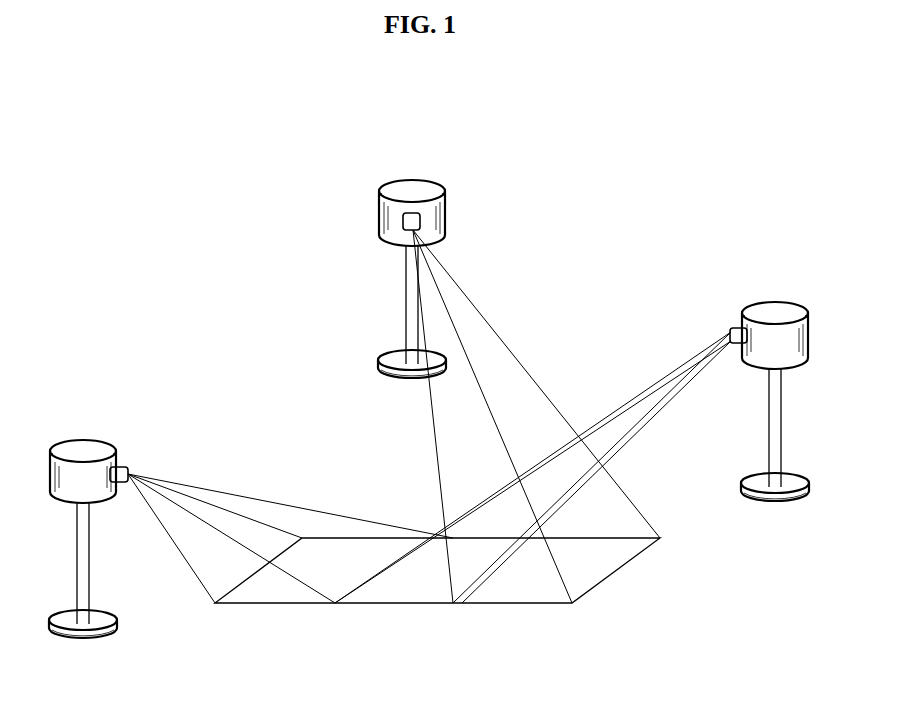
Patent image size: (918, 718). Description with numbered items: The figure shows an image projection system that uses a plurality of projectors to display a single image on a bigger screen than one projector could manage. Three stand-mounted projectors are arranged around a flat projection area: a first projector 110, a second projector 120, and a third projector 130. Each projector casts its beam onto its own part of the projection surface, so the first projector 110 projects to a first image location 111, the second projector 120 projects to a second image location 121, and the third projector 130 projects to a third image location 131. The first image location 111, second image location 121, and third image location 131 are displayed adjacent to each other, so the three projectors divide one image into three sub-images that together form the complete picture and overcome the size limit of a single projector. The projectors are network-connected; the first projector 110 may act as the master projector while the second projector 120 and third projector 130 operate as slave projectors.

The first projector 110 is at (83, 445).
The second projector 120 is at (414, 185).
The third projector 130 is at (778, 308).
The first image location 111 is at (286, 596).
The second image location 121 is at (522, 596).
The third image location 131 is at (410, 596).